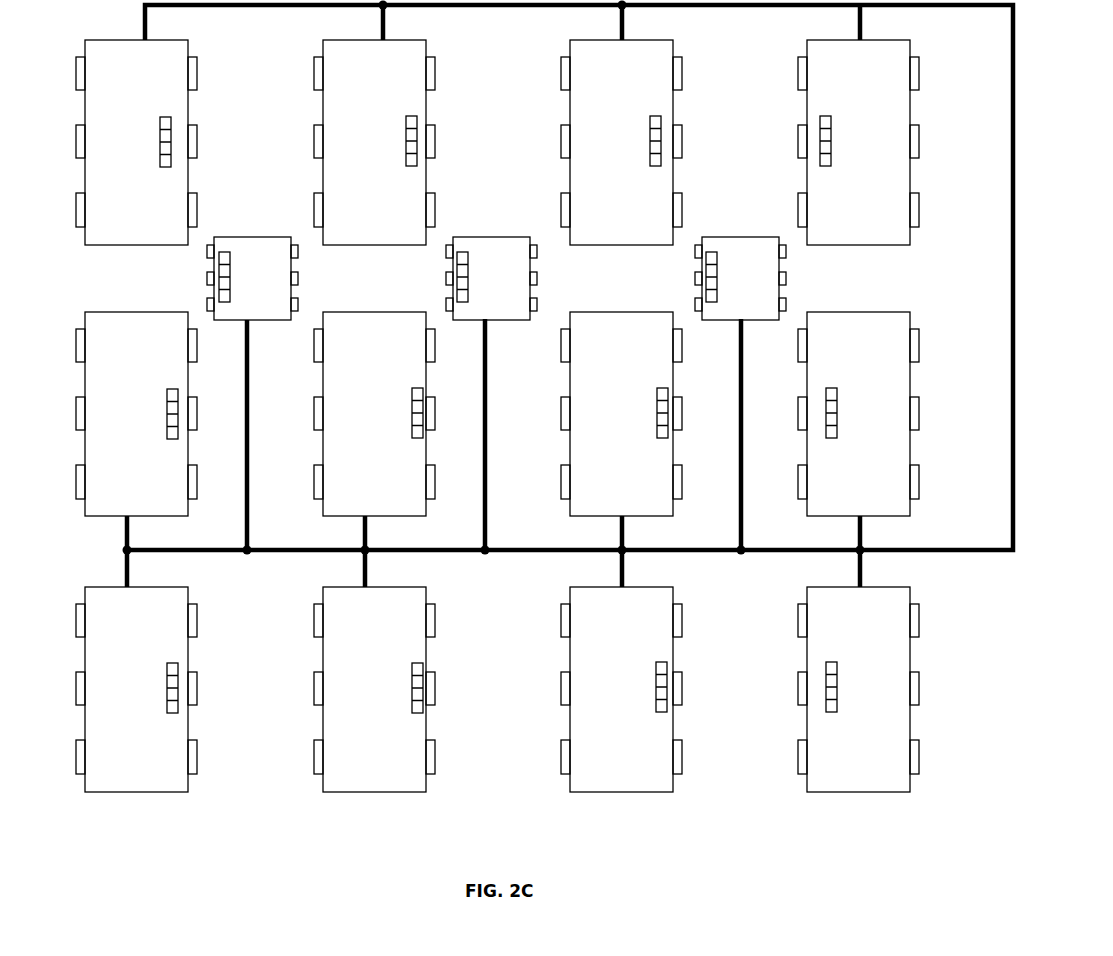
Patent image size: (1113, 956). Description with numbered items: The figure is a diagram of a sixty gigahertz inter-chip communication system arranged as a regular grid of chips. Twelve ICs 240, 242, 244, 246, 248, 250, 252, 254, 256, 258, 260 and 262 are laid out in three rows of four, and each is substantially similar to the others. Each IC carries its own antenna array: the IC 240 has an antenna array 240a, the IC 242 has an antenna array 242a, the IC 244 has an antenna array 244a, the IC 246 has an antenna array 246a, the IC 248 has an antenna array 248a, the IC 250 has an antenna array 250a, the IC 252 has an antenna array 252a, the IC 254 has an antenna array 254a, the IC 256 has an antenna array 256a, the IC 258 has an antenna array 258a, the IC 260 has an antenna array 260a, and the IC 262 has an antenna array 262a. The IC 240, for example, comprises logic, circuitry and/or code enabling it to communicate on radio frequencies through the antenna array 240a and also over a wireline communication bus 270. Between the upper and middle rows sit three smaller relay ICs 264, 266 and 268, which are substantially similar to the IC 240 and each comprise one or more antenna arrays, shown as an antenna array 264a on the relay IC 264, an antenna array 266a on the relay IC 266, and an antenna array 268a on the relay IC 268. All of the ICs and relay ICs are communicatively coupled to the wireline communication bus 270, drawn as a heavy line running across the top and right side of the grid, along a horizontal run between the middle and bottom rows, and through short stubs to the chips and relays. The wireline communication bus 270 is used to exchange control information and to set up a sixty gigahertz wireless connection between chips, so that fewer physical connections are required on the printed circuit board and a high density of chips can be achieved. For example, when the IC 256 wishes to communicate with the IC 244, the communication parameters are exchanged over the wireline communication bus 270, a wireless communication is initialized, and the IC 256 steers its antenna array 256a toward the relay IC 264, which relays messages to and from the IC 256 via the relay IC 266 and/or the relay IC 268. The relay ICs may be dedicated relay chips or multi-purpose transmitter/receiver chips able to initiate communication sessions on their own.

The IC 240 is at (162, 40).
The antenna array 240a is at (160, 143).
The IC 242 is at (398, 40).
The antenna array 242a is at (406, 143).
The IC 244 is at (650, 40).
The antenna array 244a is at (650, 128).
The IC 246 is at (878, 40).
The antenna array 246a is at (825, 160).
The IC 248 is at (95, 312).
The antenna array 248a is at (167, 415).
The IC 250 is at (340, 312).
The antenna array 250a is at (412, 413).
The IC 252 is at (603, 312).
The antenna array 252a is at (657, 392).
The IC 254 is at (862, 312).
The antenna array 254a is at (831, 432).
The IC 256 is at (143, 792).
The antenna array 256a is at (167, 700).
The IC 258 is at (400, 792).
The antenna array 258a is at (412, 700).
The IC 260 is at (637, 792).
The antenna array 260a is at (656, 677).
The IC 262 is at (862, 792).
The antenna array 262a is at (832, 712).
The relay IC 264 is at (237, 237).
The antenna array 264a is at (225, 295).
The relay IC 266 is at (470, 237).
The antenna array 266a is at (460, 255).
The relay IC 268 is at (716, 237).
The antenna array 268a is at (709, 255).
The wireline communication bus 270 is at (1013, 245).